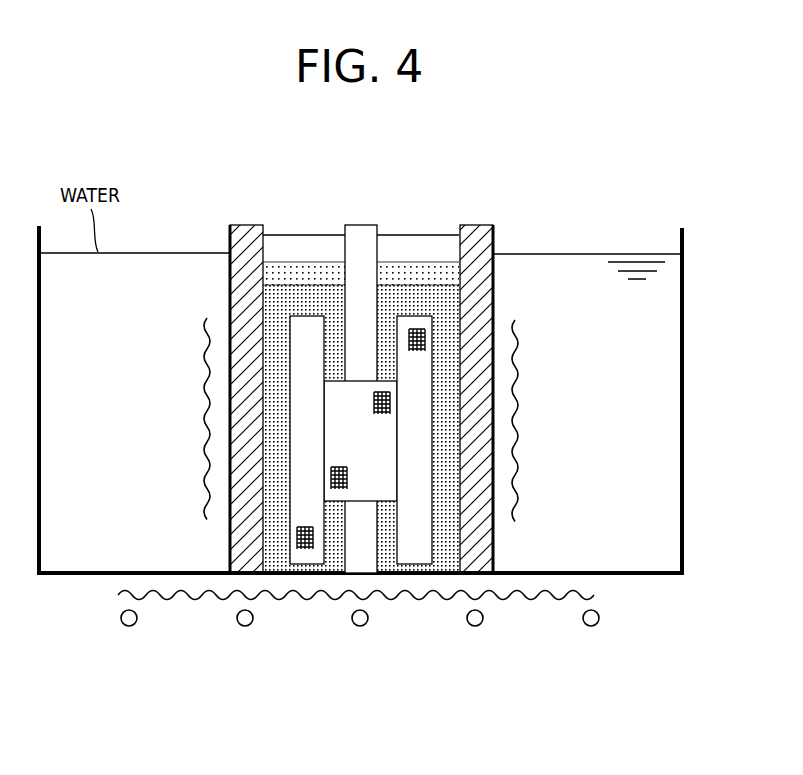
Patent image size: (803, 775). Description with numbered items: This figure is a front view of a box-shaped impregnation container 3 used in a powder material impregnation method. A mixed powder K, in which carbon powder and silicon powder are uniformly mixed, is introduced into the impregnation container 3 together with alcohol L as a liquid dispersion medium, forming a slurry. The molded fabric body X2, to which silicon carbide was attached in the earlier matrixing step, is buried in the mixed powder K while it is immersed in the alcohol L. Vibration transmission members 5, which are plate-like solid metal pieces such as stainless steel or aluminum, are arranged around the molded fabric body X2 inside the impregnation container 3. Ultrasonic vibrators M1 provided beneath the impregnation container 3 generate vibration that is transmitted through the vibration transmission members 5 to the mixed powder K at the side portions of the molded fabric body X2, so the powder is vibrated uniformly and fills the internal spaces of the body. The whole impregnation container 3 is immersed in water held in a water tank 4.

The impregnation container 3 is at (408, 364).
The water tank 4 is at (684, 365).
The vibration transmission member 5 is at (243, 224).
The molded fabric body X2 is at (312, 314).
The mixed powder K is at (395, 292).
The alcohol L is at (436, 266).
The ultrasonic vibrator M1 is at (121, 625).